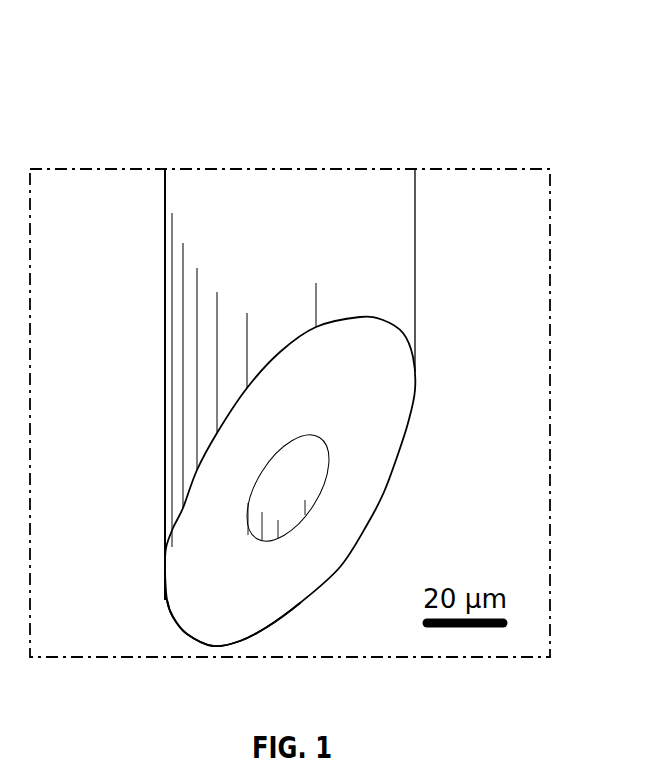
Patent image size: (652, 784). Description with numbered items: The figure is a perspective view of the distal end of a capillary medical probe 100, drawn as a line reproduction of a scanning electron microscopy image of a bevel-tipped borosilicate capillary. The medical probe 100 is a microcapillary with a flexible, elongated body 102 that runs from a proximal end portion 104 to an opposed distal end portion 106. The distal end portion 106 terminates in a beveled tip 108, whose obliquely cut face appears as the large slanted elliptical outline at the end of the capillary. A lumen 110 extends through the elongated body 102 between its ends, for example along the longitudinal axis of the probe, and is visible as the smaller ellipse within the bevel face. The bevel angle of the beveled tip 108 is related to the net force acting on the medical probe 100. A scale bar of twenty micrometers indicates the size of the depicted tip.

The medical probe 100 is at (544, 106).
The elongated body 102 is at (177, 214).
The proximal end portion 104 is at (258, 189).
The distal end portion 106 is at (294, 627).
The beveled tip 108 is at (208, 632).
The lumen 110 is at (274, 518).